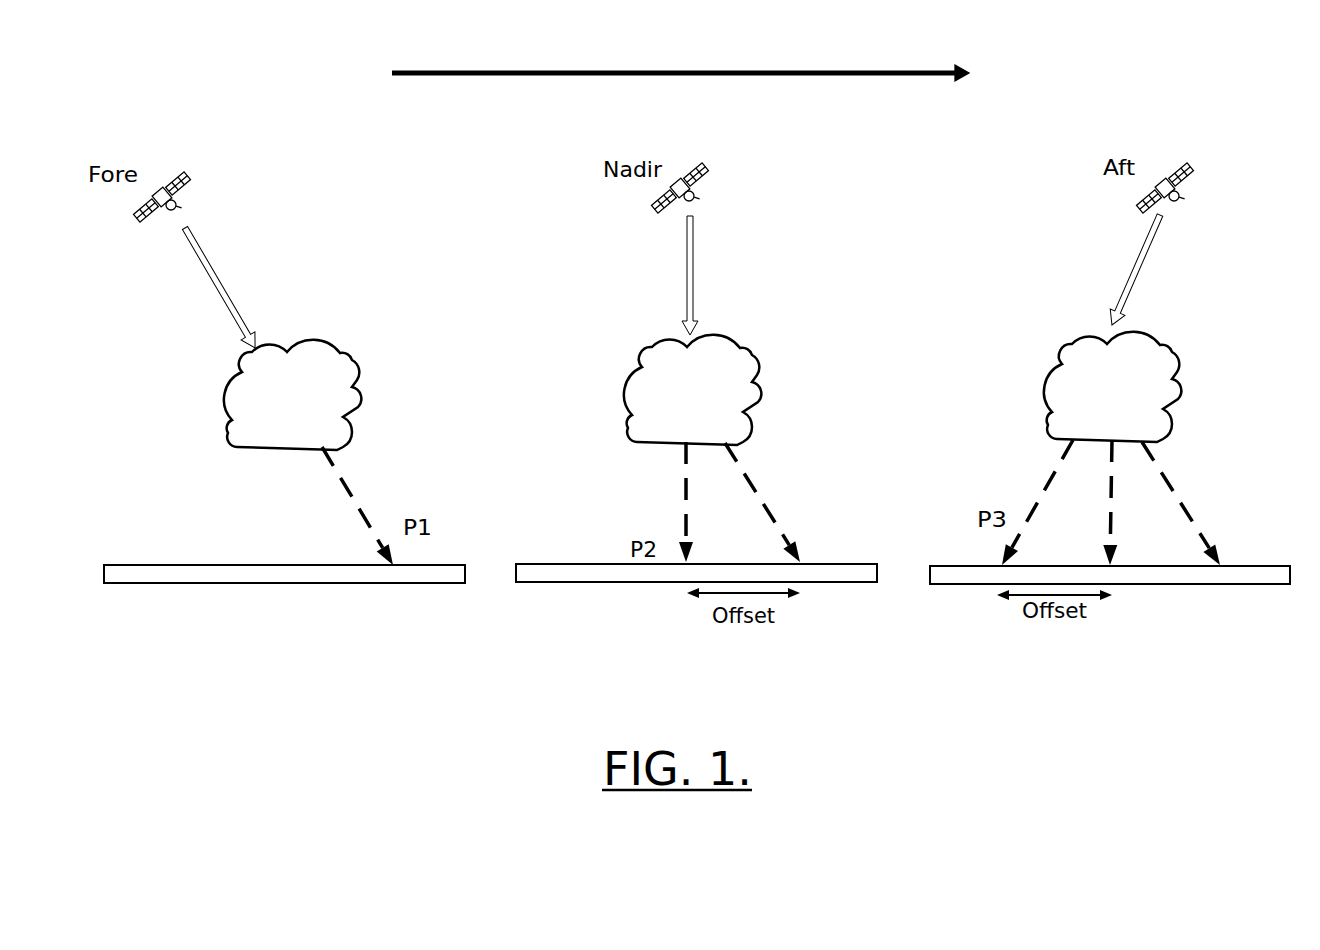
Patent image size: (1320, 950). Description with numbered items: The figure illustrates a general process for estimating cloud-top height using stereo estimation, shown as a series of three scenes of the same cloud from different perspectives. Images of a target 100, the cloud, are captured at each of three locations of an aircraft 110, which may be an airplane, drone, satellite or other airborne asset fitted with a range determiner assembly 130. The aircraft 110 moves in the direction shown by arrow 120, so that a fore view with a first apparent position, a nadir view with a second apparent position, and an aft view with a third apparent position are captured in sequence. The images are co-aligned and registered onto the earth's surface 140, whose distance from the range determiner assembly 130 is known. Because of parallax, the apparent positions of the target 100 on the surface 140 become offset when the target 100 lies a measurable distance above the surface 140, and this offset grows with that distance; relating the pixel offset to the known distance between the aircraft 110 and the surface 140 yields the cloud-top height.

The target 100 is at (743, 388).
The aircraft 110 is at (703, 171).
The arrow 120 is at (680, 49).
The range determiner assembly 130 is at (178, 202).
The earth's surface 140 is at (697, 592).